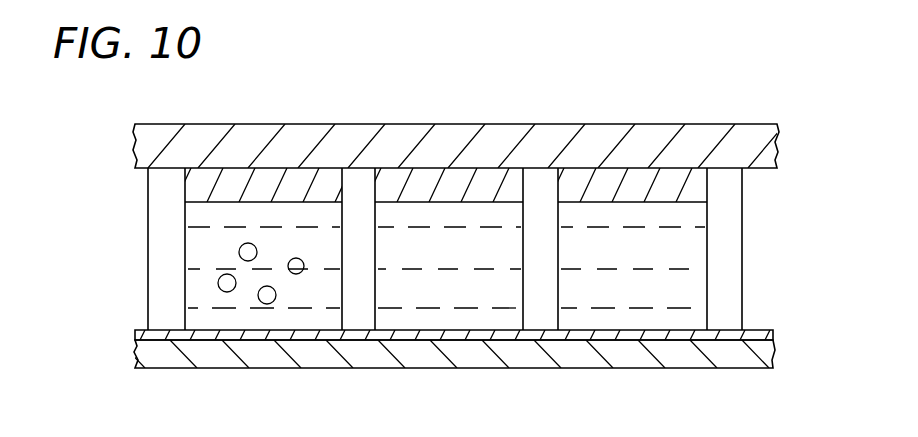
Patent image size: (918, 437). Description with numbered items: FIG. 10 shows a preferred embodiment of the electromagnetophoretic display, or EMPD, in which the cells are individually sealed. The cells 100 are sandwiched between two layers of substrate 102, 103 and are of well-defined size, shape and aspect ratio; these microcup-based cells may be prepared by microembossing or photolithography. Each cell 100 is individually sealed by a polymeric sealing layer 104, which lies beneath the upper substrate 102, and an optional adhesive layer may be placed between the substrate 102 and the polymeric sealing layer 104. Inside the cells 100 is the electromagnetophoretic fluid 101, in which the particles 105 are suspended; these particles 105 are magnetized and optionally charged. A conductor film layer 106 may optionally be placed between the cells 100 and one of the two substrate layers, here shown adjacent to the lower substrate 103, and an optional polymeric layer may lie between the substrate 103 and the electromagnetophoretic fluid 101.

The cells 100 is at (665, 238).
The electromagnetophoretic fluid 101 is at (277, 232).
The substrate 102 is at (453, 142).
The substrate 103 is at (467, 356).
The polymeric sealing layer 104 is at (227, 182).
The particles 105 is at (267, 304).
The conductor film layer 106 is at (747, 337).